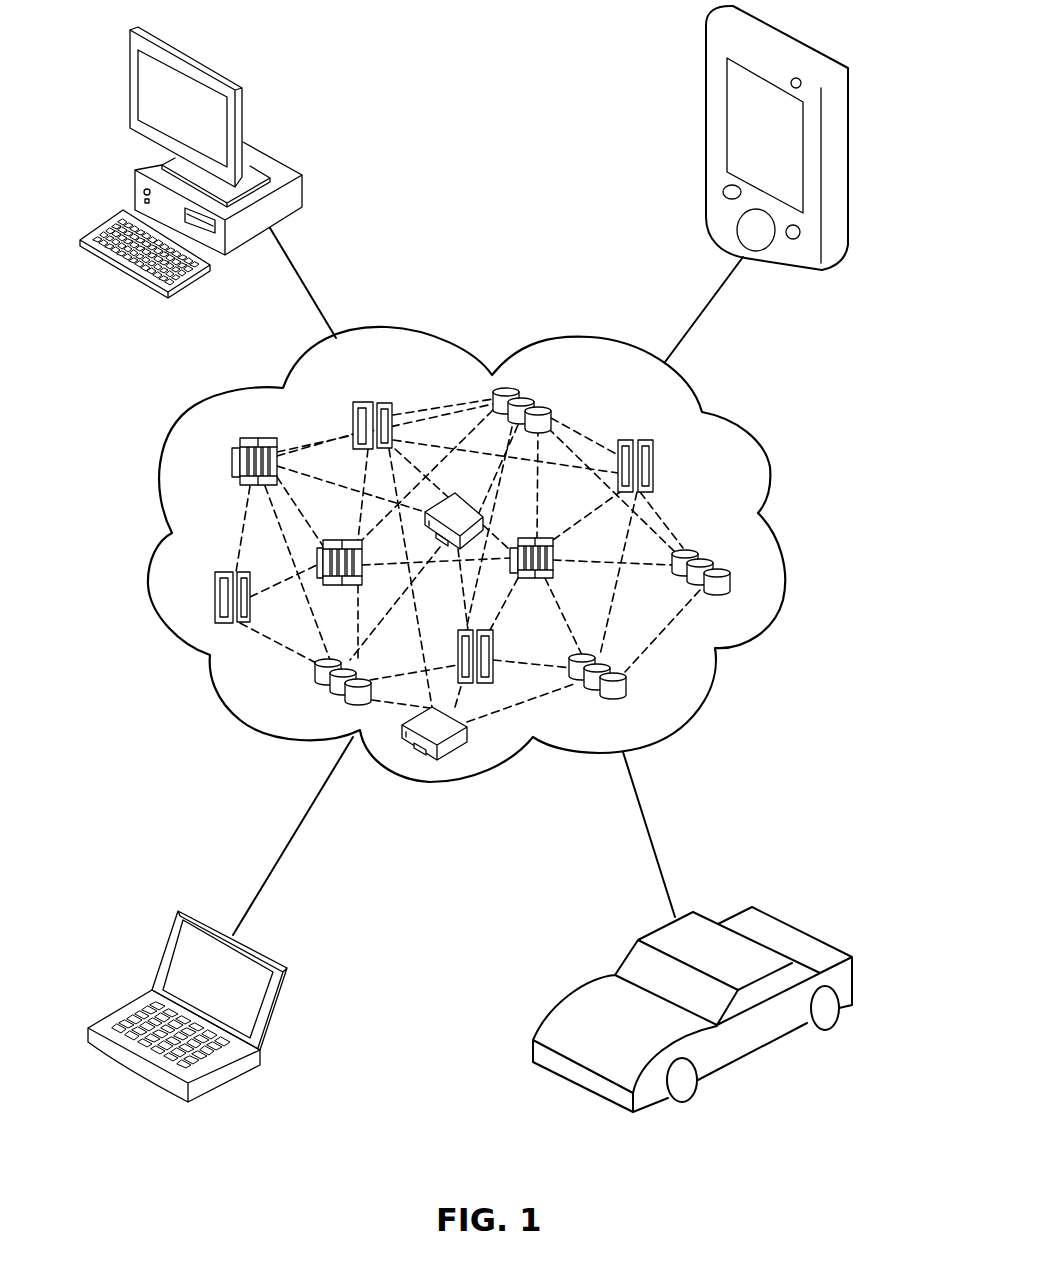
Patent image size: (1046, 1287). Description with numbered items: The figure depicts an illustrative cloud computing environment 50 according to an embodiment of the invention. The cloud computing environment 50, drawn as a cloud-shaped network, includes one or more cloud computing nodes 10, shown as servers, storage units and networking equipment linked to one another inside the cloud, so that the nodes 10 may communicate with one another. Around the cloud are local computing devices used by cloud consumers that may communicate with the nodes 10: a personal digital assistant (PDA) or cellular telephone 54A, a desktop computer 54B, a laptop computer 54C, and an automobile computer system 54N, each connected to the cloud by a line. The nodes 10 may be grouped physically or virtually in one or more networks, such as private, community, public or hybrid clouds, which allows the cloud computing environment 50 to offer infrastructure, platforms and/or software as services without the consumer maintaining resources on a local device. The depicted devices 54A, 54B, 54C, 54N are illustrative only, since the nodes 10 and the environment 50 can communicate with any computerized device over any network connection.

The cloud computing nodes 10 is at (705, 488).
The cloud computing environment 50 is at (758, 632).
The personal digital assistant (PDA) or cellular telephone 54A is at (706, 85).
The desktop computer 54B is at (303, 188).
The laptop computer 54C is at (285, 978).
The automobile computer system 54N is at (853, 977).